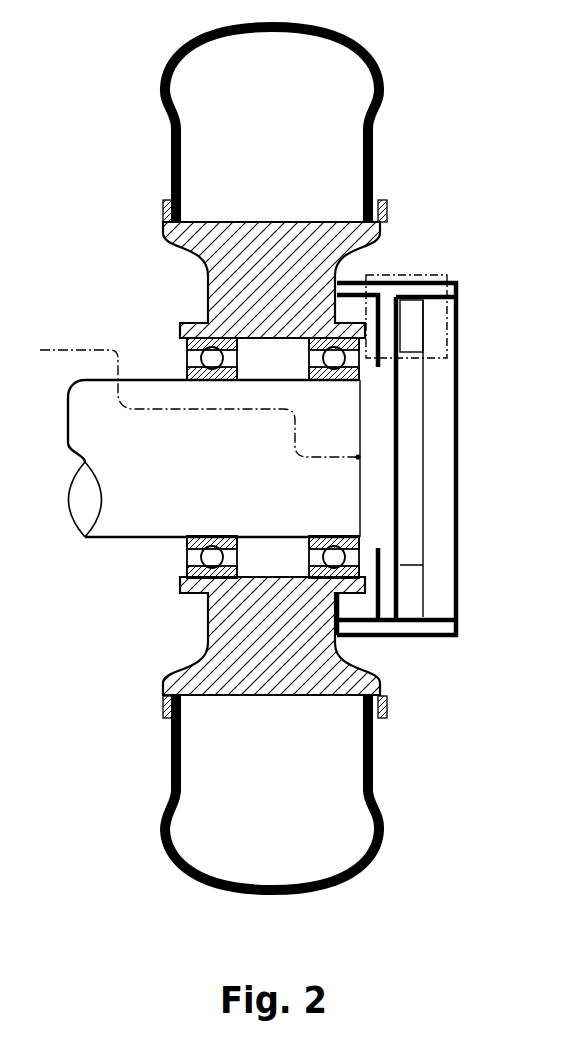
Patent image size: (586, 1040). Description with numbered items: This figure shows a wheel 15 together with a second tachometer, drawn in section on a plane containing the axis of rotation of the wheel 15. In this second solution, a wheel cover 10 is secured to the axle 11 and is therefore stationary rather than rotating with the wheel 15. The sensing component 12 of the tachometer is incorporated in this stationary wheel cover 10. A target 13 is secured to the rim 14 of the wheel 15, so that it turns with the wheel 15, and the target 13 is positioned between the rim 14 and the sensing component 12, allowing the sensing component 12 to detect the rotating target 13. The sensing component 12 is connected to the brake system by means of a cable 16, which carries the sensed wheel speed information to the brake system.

The wheel cover 10 is at (459, 460).
The axle 11 is at (147, 380).
The sensing component 12 is at (410, 328).
The target 13 is at (383, 315).
The rim 14 is at (345, 637).
The wheel 15 is at (422, 734).
The cable 16 is at (232, 412).